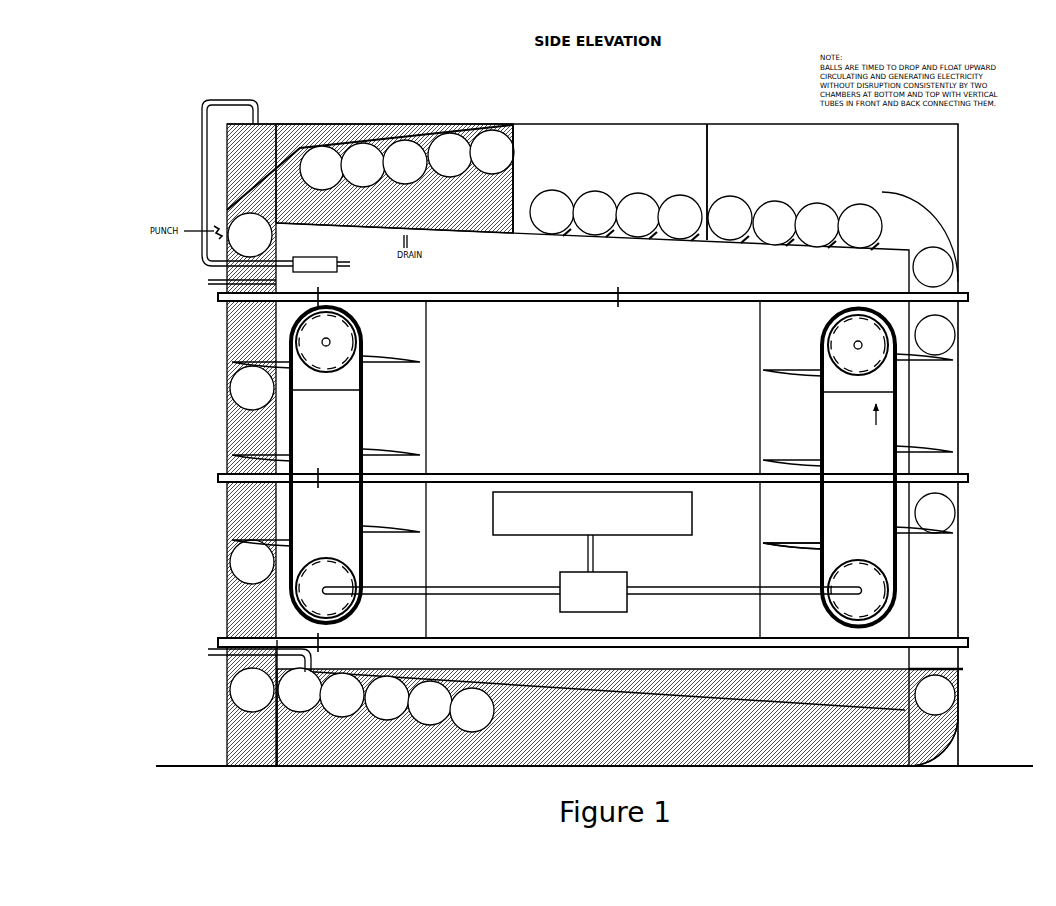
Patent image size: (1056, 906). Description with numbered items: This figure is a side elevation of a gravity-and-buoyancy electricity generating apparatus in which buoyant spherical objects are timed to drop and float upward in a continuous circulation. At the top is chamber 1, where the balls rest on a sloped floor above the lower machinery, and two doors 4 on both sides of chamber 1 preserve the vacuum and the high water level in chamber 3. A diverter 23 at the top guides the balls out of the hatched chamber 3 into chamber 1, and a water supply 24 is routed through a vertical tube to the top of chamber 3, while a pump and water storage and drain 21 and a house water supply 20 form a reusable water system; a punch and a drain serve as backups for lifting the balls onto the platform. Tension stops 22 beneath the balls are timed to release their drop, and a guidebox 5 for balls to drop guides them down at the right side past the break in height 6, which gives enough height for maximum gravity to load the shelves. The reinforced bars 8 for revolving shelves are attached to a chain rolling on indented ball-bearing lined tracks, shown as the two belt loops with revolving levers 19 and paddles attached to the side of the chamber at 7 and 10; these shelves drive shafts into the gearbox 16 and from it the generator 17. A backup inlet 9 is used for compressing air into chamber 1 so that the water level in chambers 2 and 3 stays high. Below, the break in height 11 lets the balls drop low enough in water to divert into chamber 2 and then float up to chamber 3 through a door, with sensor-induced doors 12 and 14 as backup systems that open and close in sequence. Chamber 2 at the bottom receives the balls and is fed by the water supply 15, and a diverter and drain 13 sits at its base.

The chamber 1 is at (654, 381).
The chamber 2 is at (617, 717).
The chamber 3 is at (211, 513).
The doors 4 is at (516, 150).
The guidebox for balls to drop 5 is at (938, 287).
The break in height 6 is at (960, 297).
The attachment to side of chamber 7 is at (896, 392).
The reinforced bars for revolving shelves 8 is at (876, 425).
The air compression inlet 9 is at (968, 460).
The attachment to side of chamber 10 is at (897, 543).
The break in height 11 is at (964, 641).
The sensor induced doors 12 is at (963, 670).
The diverter and drain 13 is at (940, 745).
The sensor induced doors 14 is at (279, 739).
The water supply 15 is at (245, 658).
The gearbox 16 is at (592, 592).
The generator 17 is at (592, 532).
The revolving levers 19 is at (363, 343).
The water supply - house 20 is at (227, 283).
The pump and water storage and drain 21 is at (295, 265).
The tension stops 22 is at (603, 241).
The diverter 23 is at (338, 147).
The water supply 24 is at (292, 123).